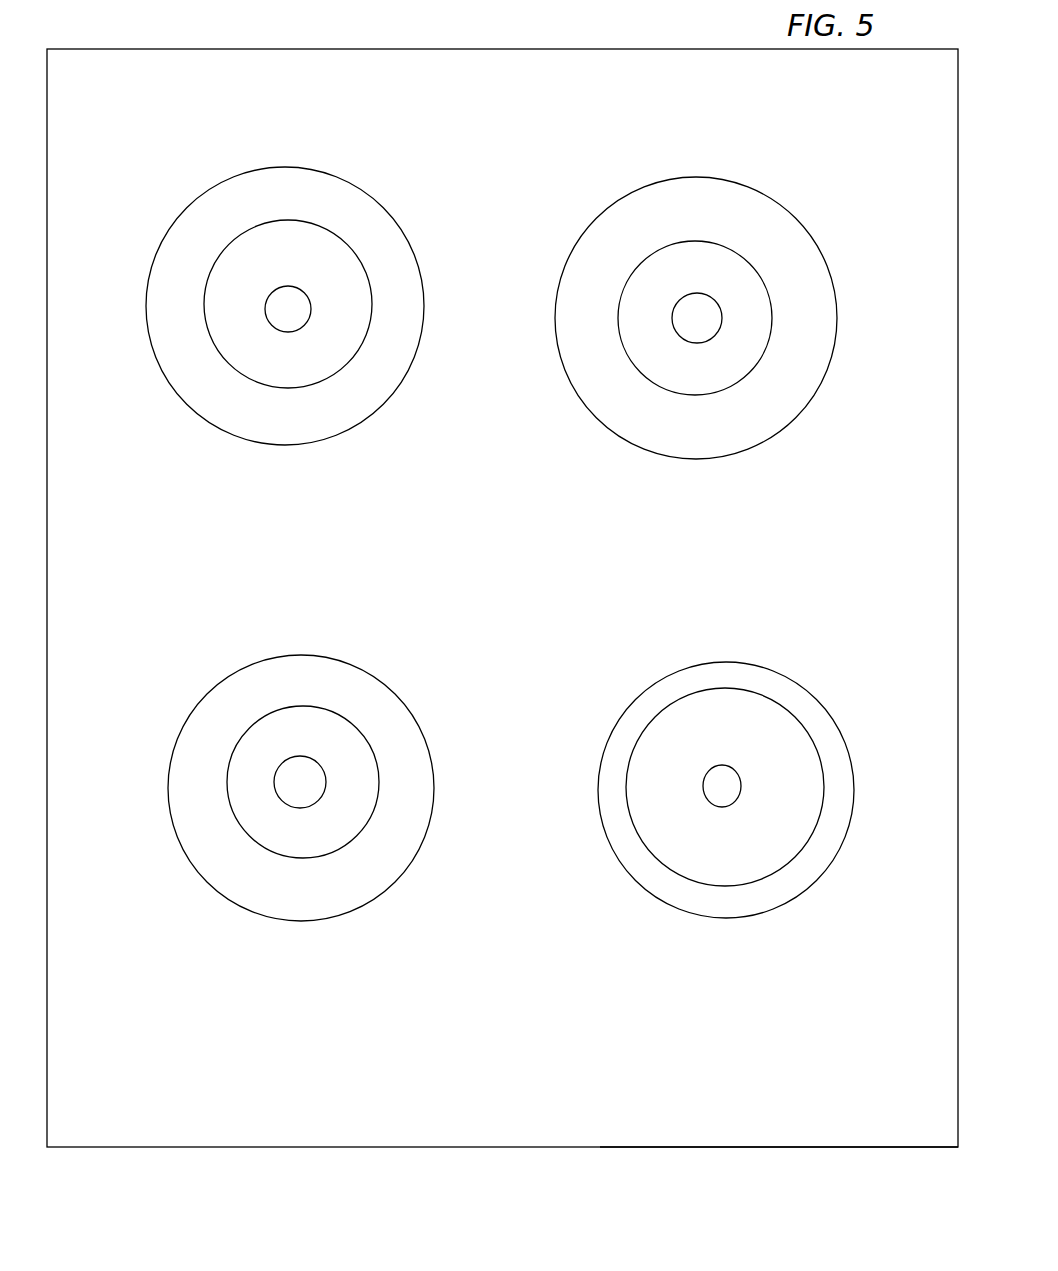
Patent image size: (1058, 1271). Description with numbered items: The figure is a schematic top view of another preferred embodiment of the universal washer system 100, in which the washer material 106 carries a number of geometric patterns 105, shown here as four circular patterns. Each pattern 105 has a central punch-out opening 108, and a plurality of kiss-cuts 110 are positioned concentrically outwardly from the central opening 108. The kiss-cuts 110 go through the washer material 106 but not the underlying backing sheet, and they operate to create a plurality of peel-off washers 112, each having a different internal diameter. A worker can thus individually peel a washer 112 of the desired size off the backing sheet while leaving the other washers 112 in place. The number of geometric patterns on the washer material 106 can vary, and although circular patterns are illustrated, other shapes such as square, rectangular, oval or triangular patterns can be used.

The universal washer system 100 is at (458, 1172).
The pattern 105 is at (412, 194).
The washer material 106 is at (720, 1127).
The central punch-out opening 108 is at (278, 307).
The kiss-cuts 110 is at (407, 237).
The peel-off washers 112 is at (348, 306).